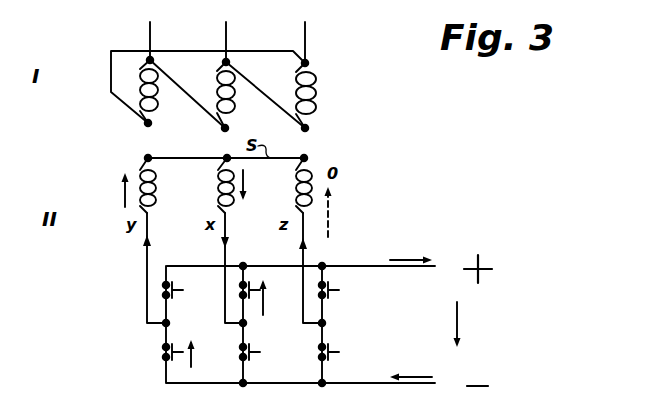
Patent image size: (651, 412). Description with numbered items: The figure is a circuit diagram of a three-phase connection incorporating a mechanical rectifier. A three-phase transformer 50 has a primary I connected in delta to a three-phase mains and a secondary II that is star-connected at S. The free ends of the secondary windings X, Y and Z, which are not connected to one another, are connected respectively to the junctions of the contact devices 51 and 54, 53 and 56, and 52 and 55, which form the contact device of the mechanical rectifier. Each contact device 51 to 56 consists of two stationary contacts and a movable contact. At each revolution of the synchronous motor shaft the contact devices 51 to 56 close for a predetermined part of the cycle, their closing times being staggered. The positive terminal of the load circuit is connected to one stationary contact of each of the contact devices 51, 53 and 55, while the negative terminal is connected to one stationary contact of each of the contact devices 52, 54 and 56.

The three-phase transformer 50 is at (228, 83).
The contact device 51 is at (230, 291).
The contact device 52 is at (313, 354).
The contact device 53 is at (149, 291).
The contact device 54 is at (234, 354).
The contact device 55 is at (308, 291).
The contact device 56 is at (155, 354).